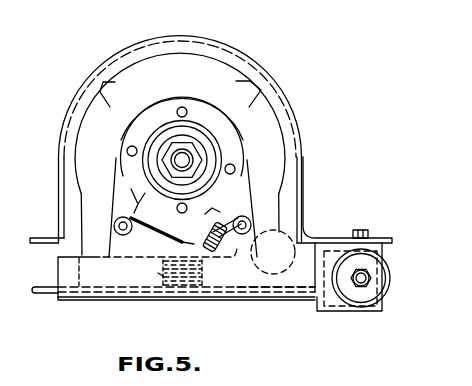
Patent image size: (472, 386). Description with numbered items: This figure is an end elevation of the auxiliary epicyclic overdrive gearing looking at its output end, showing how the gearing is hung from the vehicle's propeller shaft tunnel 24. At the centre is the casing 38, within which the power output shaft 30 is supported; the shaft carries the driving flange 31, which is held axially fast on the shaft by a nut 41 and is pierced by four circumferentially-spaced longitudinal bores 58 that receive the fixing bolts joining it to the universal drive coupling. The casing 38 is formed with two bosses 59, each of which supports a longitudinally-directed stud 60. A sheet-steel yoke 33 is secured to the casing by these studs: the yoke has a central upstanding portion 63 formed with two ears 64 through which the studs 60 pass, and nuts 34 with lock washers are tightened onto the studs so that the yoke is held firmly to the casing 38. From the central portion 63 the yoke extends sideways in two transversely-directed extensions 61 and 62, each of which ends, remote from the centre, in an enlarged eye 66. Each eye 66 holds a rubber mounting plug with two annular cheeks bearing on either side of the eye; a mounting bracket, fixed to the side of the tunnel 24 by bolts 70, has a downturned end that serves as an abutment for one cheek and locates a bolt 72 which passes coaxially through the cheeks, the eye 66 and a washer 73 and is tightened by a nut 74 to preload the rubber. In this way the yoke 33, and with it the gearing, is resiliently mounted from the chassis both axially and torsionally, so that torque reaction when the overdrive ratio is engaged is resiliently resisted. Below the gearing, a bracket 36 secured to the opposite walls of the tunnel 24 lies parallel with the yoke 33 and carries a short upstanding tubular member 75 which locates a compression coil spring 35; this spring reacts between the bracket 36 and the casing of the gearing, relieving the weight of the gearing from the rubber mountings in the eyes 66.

The propeller shaft tunnel 24 is at (188, 39).
The casing 38 is at (195, 84).
The driving flange 31 is at (203, 113).
The longitudinal bores 58 is at (133, 146).
The power output shaft 30 is at (183, 160).
The nut 41 is at (198, 149).
The bosses 59 is at (116, 186).
The ears 64 is at (116, 224).
The studs 60 is at (112, 227).
The nuts 34 is at (118, 232).
The central upstanding portion 63 is at (170, 246).
The transversely-directed extension 62 is at (98, 281).
The bracket 36 is at (43, 295).
The compression coil spring 35 is at (183, 284).
The upstanding tubular member 75 is at (160, 274).
The transversely-directed extension 61 is at (323, 281).
The yoke 33 is at (278, 254).
The enlarged eye 66 is at (385, 252).
The bolts 70 is at (367, 231).
The washer 73 is at (364, 267).
The nut 74 is at (372, 284).
The bolt 72 is at (359, 289).